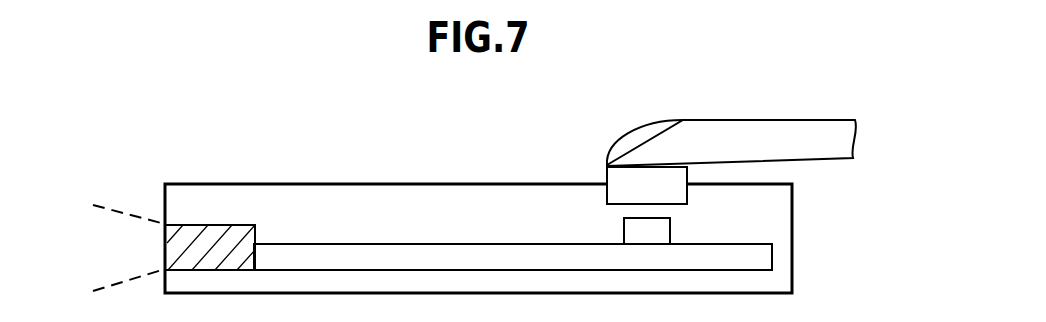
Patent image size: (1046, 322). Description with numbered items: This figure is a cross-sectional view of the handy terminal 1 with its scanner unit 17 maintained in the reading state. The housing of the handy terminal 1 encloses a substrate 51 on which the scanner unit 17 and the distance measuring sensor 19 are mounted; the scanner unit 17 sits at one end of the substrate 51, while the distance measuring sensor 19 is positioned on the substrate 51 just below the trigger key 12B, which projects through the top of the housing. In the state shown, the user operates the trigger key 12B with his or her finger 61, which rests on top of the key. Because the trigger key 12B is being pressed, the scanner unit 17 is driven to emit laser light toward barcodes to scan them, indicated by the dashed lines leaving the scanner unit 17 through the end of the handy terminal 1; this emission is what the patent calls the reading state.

The handy terminal 1 is at (792, 213).
The trigger key 12B is at (606, 177).
The scanner unit 17 is at (165, 247).
The distance measuring sensor 19 is at (623, 230).
The substrate 51 is at (335, 244).
The user's finger 61 is at (737, 120).